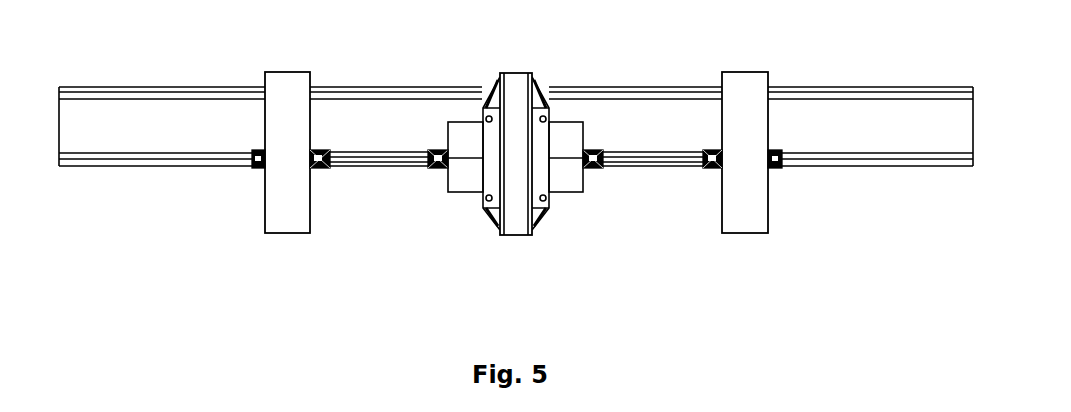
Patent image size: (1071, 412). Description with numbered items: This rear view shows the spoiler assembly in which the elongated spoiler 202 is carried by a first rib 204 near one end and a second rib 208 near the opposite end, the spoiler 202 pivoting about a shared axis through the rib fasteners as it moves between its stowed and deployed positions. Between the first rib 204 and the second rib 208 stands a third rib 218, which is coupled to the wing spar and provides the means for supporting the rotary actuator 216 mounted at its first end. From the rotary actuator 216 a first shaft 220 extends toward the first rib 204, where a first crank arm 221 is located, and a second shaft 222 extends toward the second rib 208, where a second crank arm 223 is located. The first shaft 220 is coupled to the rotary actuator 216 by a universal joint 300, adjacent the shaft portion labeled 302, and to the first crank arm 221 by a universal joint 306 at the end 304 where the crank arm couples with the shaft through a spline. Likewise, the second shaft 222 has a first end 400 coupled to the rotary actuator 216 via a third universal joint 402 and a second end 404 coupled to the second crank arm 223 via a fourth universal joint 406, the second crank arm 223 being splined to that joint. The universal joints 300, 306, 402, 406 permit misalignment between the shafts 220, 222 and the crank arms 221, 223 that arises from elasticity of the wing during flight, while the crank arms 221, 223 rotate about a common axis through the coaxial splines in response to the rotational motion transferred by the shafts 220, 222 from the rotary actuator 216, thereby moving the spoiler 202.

The spoiler 202 is at (140, 87).
The first rib 204 is at (288, 233).
The second rib 208 is at (742, 228).
The rotary actuator 216 is at (577, 165).
The third rib 218 is at (518, 225).
The first shaft 220 is at (418, 147).
The first crank arm 221 is at (260, 168).
The second shaft 222 is at (612, 147).
The second crank arm 223 is at (775, 168).
The universal joint 300 is at (433, 166).
The first rod inner end fitting 302 is at (440, 150).
The end 304 is at (330, 166).
The universal joint 306 is at (316, 150).
The first end 400 is at (600, 166).
The third universal joint 402 is at (592, 150).
The second end 404 is at (700, 166).
The fourth universal joint 406 is at (710, 150).